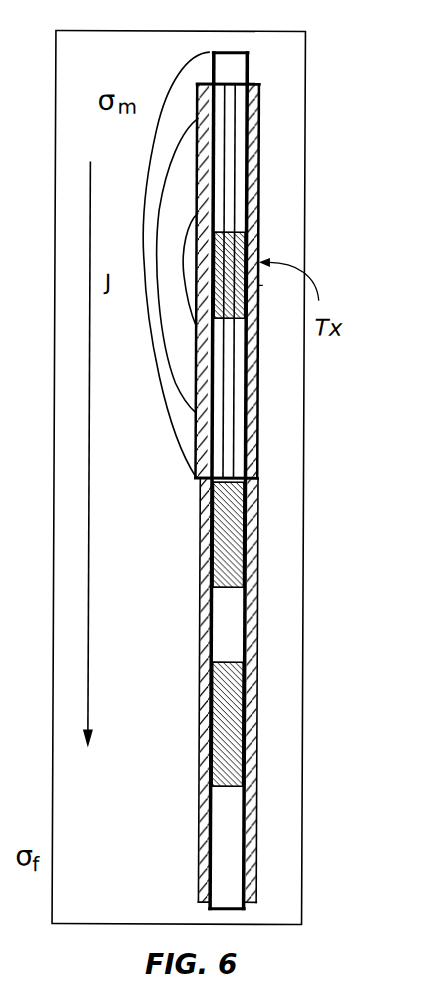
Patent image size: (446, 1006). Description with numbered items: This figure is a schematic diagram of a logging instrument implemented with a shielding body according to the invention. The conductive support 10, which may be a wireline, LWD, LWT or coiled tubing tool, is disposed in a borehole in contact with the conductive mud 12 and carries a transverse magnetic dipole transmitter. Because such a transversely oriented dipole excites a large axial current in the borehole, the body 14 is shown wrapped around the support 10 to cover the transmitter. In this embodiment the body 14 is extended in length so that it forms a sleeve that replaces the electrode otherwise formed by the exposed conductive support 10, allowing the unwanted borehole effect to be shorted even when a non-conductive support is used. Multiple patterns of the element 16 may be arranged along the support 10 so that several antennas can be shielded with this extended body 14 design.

The conductive support 10 is at (236, 814).
The conductive mud 12 is at (279, 97).
The body 14 is at (188, 322).
The element 16 is at (259, 399).